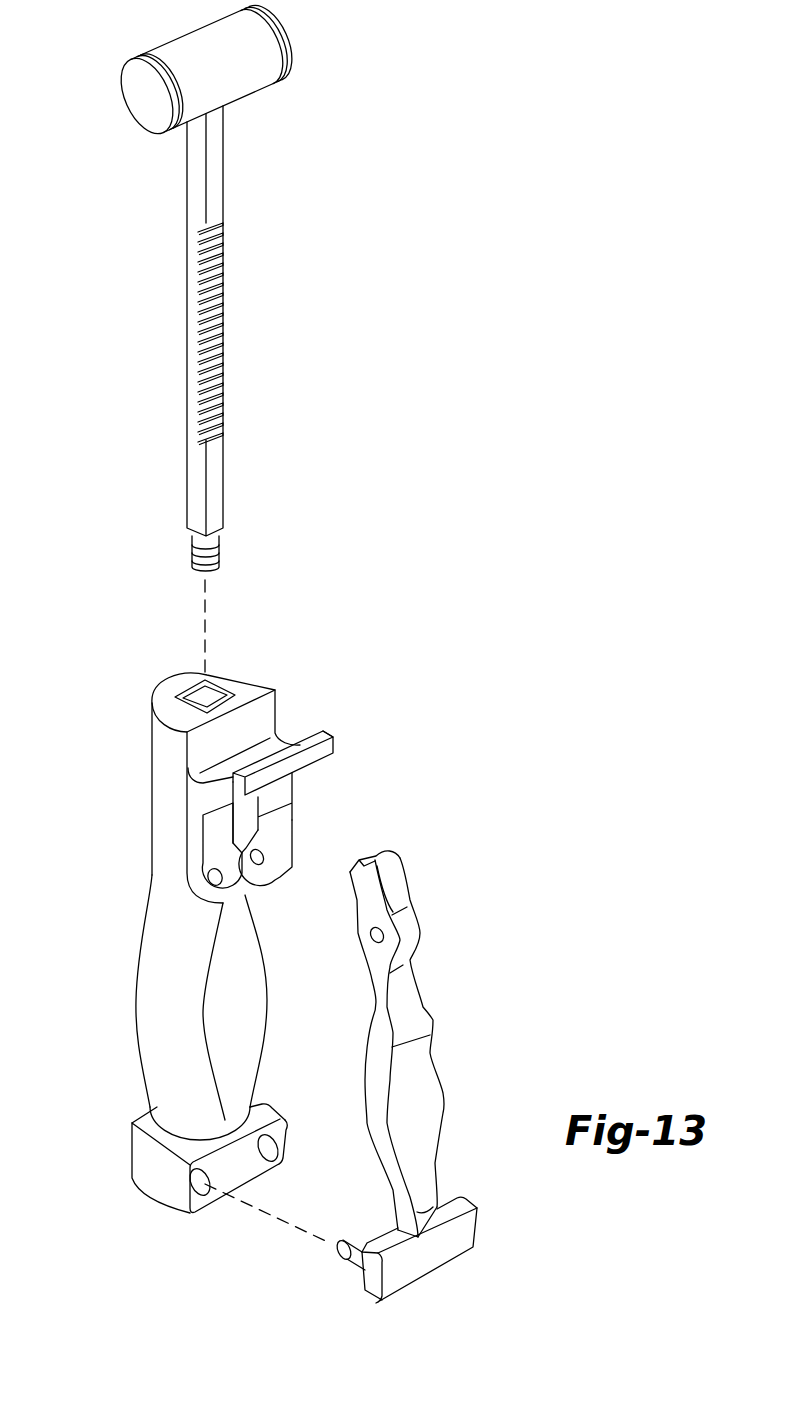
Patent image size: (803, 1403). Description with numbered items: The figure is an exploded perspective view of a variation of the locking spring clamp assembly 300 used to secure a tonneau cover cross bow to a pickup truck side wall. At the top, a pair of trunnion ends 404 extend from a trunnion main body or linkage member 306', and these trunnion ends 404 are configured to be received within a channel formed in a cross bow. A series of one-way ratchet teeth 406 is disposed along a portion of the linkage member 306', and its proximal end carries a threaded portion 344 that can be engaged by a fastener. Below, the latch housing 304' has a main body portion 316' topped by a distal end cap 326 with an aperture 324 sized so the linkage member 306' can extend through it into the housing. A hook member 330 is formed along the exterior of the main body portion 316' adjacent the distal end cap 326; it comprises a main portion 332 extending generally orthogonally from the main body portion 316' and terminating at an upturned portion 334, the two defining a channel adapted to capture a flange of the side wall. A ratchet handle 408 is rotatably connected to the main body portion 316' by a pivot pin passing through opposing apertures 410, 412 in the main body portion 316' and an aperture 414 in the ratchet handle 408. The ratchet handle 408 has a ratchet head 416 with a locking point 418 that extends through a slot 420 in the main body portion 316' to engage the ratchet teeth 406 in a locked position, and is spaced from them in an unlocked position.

The locking spring clamp assembly 300 is at (468, 278).
The trunnion ends 404 is at (140, 95).
The linkage member 306' is at (164, 321).
The one-way ratchet teeth 406 is at (222, 337).
The threaded portion 344 is at (222, 556).
The distal end cap 326 is at (167, 703).
The aperture 324 is at (220, 697).
The main portion 332 is at (207, 797).
The hook member 330 is at (333, 750).
The upturned portion 334 is at (317, 733).
The slot 420 is at (243, 817).
The aperture 412 is at (263, 858).
The aperture 410 is at (208, 877).
The main body portion 316' is at (233, 1007).
The latch housing 304' is at (202, 1124).
The ratchet handle 408 is at (427, 1083).
The locking point 418 is at (368, 855).
The ratchet head 416 is at (397, 883).
The aperture 414 is at (371, 943).